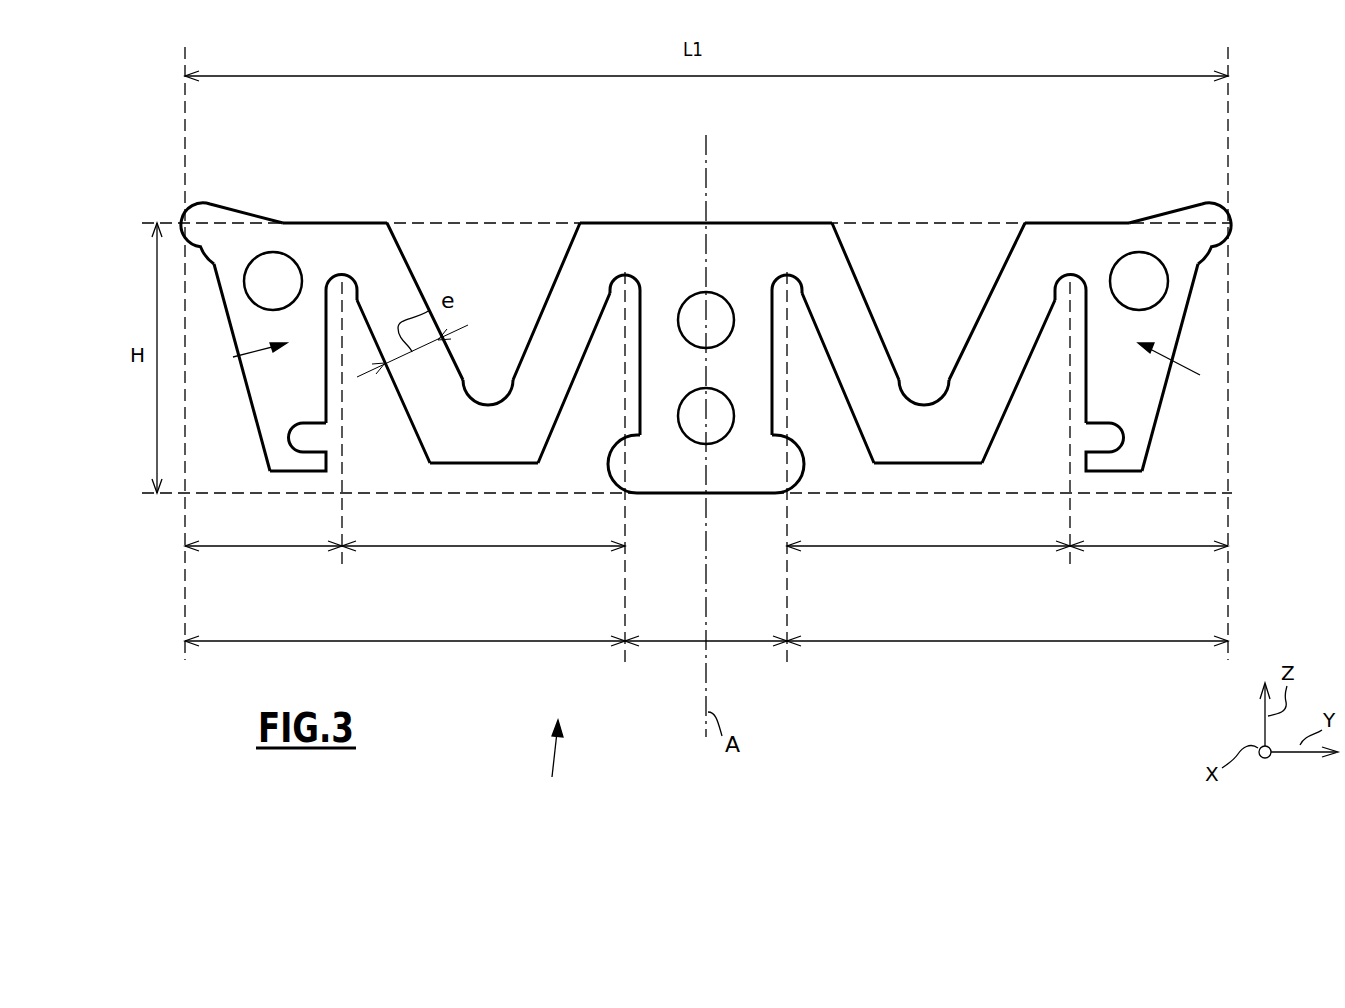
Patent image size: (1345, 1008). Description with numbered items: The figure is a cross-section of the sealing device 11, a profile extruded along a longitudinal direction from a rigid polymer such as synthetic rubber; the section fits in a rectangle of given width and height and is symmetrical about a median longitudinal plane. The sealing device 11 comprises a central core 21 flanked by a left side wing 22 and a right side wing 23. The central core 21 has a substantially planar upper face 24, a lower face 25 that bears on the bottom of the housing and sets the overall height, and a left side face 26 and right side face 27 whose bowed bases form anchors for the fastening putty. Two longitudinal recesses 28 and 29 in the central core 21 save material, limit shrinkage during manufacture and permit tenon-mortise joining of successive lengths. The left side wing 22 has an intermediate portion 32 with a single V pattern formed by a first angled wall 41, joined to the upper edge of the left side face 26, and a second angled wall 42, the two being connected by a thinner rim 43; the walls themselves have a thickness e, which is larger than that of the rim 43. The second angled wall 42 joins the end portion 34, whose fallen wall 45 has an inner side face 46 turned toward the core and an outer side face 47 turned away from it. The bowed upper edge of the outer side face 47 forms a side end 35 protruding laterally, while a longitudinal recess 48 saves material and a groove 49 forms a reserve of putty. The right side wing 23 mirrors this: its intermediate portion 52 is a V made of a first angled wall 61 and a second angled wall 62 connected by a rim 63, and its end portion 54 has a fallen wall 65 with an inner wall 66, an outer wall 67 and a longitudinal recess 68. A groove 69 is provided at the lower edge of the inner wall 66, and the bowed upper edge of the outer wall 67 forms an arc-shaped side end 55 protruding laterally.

The sealing device 11 is at (552, 777).
The central core 21 is at (690, 645).
The left side wing 22 is at (375, 645).
The right side wing 23 is at (965, 645).
The upper face 24 is at (747, 222).
The lower face 25 is at (747, 495).
The left side face 26 is at (640, 376).
The right side face 27 is at (773, 378).
The longitudinal recess 28 is at (693, 295).
The longitudinal recess 29 is at (690, 442).
The intermediate portion 32 is at (500, 548).
The end portion 34 is at (250, 548).
The side end 35 is at (192, 210).
The first angled wall 41 is at (563, 313).
The second angled wall 42 is at (400, 290).
The rim 43 is at (484, 430).
The fallen wall 45 is at (233, 357).
The inner side face 46 is at (328, 398).
The outer side face 47 is at (252, 412).
The longitudinal recess 48 is at (303, 250).
The groove 49 is at (304, 452).
The intermediate portion 52 is at (955, 548).
The end portion 54 is at (1178, 548).
The side end 55 is at (1228, 230).
The first angled wall 61 is at (853, 332).
The second angled wall 62 is at (1003, 307).
The rim 63 is at (933, 452).
The fallen wall 65 is at (1207, 372).
The inner wall 66 is at (1086, 397).
The outer wall 67 is at (1162, 403).
The longitudinal recess 68 is at (1137, 252).
The groove 69 is at (1106, 455).